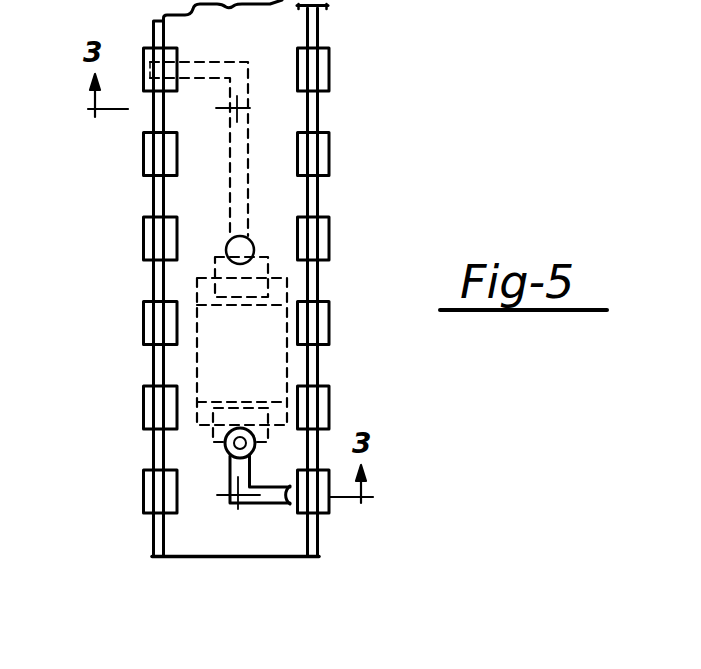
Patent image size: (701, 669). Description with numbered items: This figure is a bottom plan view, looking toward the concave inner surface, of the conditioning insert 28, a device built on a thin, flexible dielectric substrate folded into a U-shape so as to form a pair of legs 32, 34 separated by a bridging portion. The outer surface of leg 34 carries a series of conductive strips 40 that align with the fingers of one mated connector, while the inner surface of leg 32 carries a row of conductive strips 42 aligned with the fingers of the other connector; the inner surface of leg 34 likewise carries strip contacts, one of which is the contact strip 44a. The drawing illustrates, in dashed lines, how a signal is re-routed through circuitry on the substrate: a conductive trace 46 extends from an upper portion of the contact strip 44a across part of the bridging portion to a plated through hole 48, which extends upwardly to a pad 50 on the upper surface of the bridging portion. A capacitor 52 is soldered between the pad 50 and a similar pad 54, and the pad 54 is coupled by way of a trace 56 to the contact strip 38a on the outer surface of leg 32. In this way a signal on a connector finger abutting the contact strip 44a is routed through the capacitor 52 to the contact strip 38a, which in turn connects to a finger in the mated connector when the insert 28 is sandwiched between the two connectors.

The conditioning insert 28 is at (350, 218).
The leg 32 is at (159, 558).
The leg 34 is at (312, 558).
The contact strip 38a is at (150, 88).
The conductive strips 40 is at (328, 138).
The conductive strips 42 is at (168, 340).
The contact strip 44a is at (287, 506).
The conductive trace 46 is at (270, 498).
The plated through hole 48 is at (233, 449).
The pad 50 is at (222, 436).
The capacitor 52 is at (279, 372).
The pad 54 is at (225, 270).
The trace 56 is at (230, 172).